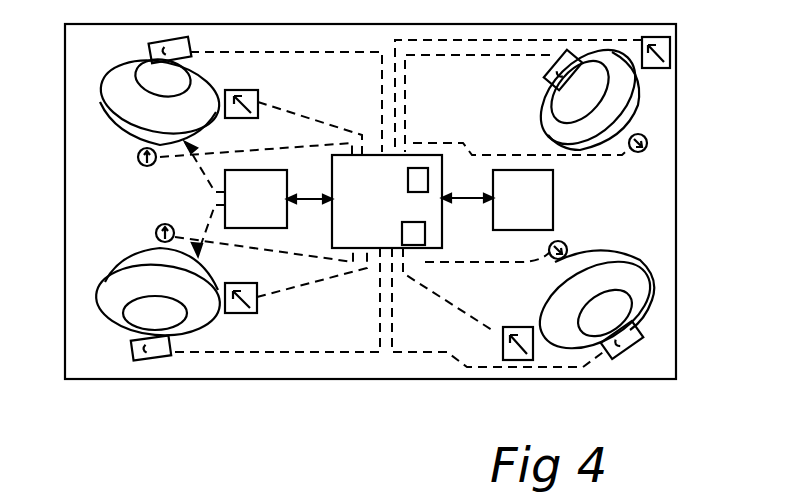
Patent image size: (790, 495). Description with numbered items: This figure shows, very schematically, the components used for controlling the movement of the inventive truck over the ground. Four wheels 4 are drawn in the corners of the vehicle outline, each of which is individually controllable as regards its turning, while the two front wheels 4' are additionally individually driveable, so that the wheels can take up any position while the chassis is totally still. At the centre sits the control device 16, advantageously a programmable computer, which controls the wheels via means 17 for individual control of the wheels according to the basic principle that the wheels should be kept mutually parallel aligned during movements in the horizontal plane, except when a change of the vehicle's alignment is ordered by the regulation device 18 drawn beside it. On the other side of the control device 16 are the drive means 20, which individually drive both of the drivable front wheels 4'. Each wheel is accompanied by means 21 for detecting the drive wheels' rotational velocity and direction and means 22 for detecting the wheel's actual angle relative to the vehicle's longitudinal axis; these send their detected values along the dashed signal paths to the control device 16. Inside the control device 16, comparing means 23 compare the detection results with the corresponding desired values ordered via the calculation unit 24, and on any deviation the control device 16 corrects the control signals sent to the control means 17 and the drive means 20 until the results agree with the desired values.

The wheel 4 is at (620, 305).
The front wheel 4' is at (158, 338).
The control device 16 is at (400, 165).
The means for individual control of the wheels 17 is at (180, 46).
The regulation device 18 is at (553, 200).
The drive means 20 is at (246, 228).
The means to detect the drive wheels' rotational velocity and direction 21 is at (139, 165).
The means to detect the wheels' actual angle 22 is at (258, 97).
The comparing means 23 is at (428, 176).
The calculation unit 24 is at (425, 236).